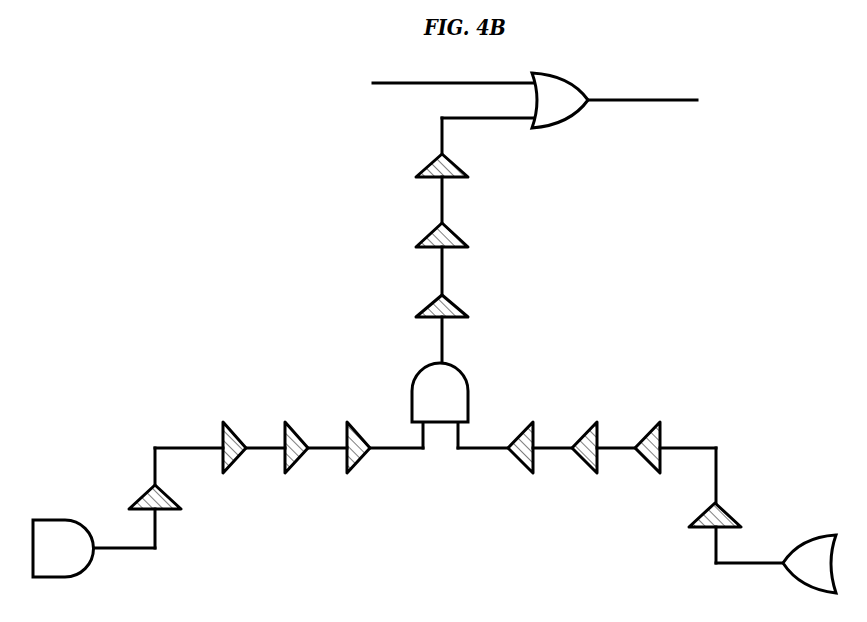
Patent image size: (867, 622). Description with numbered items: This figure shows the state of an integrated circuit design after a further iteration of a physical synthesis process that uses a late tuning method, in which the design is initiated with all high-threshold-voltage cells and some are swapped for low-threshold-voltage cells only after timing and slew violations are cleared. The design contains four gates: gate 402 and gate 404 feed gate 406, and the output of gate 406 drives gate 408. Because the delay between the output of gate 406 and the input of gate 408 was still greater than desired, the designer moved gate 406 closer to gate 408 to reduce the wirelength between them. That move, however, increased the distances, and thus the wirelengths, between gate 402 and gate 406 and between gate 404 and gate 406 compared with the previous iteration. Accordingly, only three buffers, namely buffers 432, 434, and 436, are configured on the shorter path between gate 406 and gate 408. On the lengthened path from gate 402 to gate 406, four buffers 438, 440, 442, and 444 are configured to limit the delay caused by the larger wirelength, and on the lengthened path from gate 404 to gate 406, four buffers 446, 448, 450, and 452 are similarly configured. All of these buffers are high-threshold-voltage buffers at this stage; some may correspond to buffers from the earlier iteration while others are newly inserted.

The gate 402 is at (797, 573).
The gate 404 is at (48, 558).
The gate 406 is at (426, 400).
The gate 408 is at (544, 108).
The buffer 432 is at (380, 180).
The buffer 434 is at (380, 248).
The buffer 436 is at (380, 320).
The buffer 438 is at (514, 420).
The buffer 440 is at (578, 420).
The buffer 442 is at (641, 420).
The buffer 444 is at (748, 528).
The buffer 446 is at (340, 420).
The buffer 448 is at (278, 420).
The buffer 450 is at (216, 420).
The buffer 452 is at (94, 511).